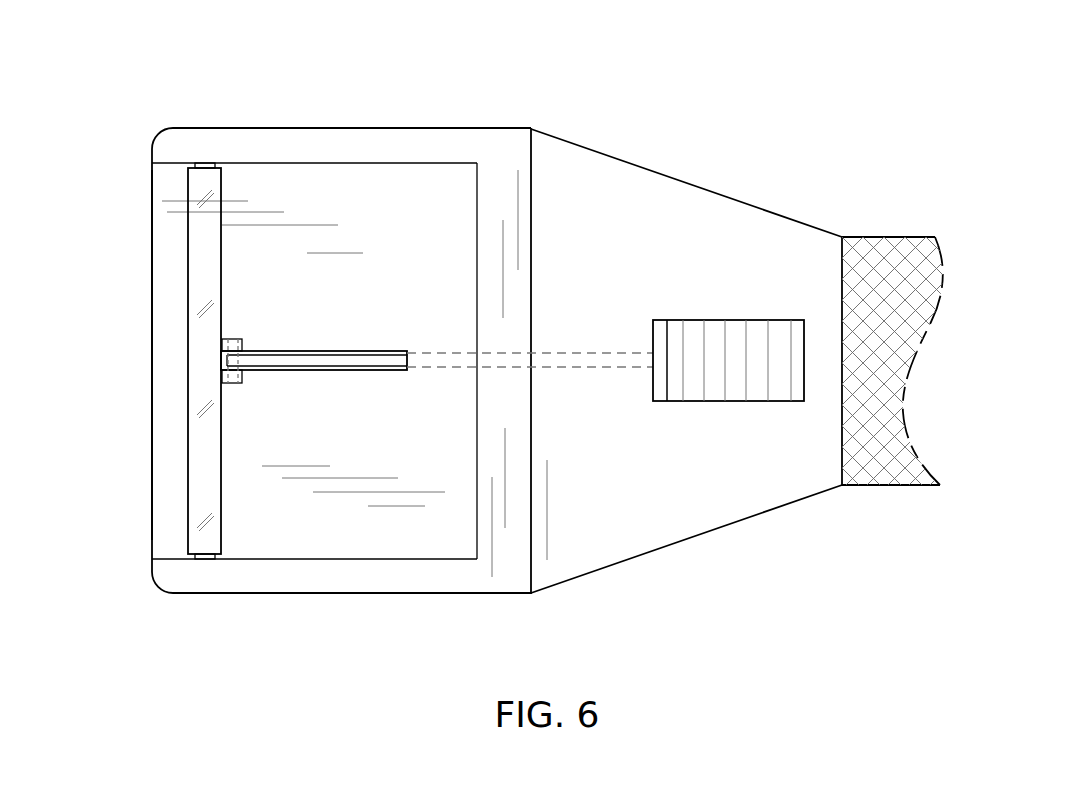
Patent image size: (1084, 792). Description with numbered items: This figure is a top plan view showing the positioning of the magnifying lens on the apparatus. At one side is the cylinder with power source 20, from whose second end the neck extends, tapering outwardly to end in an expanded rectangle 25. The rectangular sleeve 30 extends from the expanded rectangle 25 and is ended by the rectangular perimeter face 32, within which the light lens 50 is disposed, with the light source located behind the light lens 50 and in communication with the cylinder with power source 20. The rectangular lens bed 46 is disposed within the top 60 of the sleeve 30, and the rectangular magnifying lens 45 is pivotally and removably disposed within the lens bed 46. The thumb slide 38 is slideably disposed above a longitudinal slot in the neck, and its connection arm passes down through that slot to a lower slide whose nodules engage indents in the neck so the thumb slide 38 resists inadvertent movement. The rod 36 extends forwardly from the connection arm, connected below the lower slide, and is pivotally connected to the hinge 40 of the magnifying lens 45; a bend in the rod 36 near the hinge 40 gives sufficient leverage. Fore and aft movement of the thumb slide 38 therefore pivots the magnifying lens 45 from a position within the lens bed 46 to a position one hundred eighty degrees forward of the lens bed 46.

The cylinder with power source 20 is at (917, 237).
The expanded rectangle 25 is at (560, 138).
The rectangular sleeve 30 is at (412, 593).
The rectangular perimeter face 32 is at (152, 153).
The rod 36 is at (335, 362).
The thumb slide 38 is at (773, 327).
The hinge 40 is at (232, 383).
The rectangular magnifying lens 45 is at (216, 179).
The rectangular lens bed 46 is at (345, 176).
The light lens 50 is at (152, 378).
The top 60 is at (445, 143).